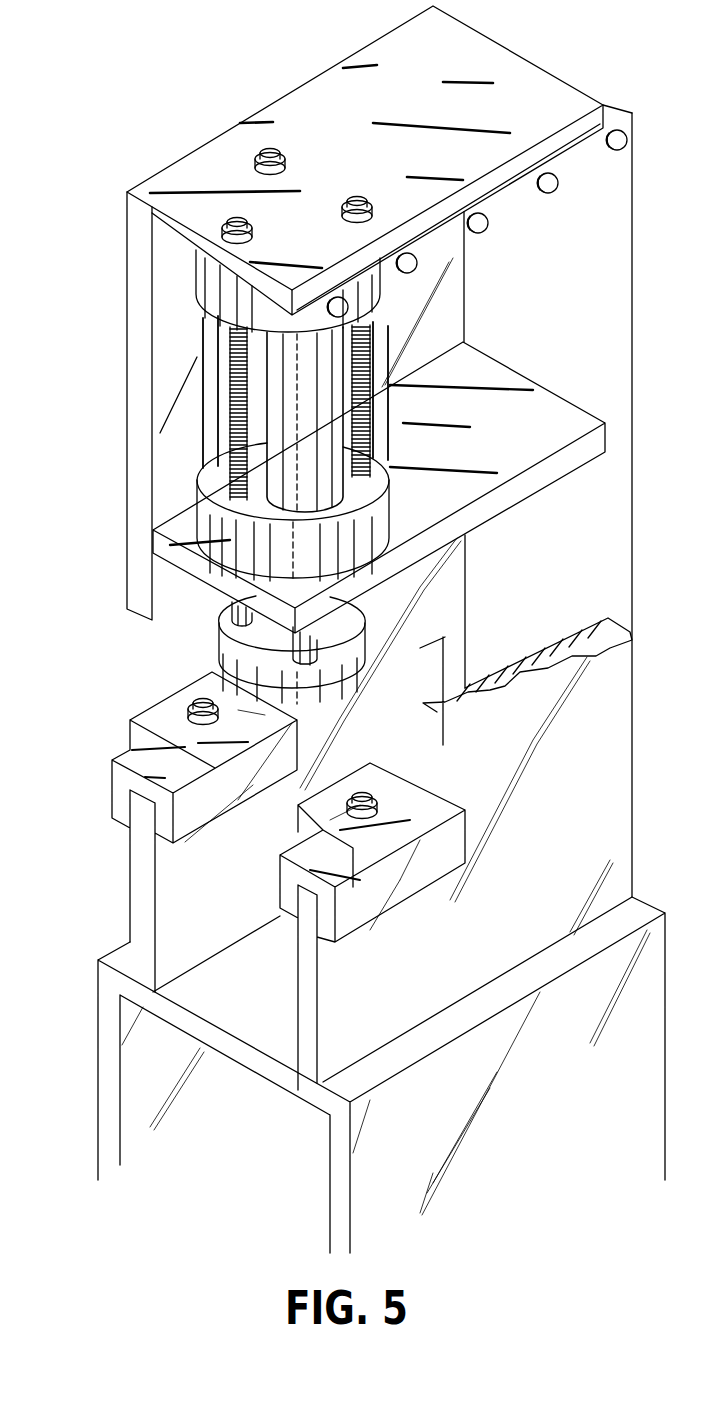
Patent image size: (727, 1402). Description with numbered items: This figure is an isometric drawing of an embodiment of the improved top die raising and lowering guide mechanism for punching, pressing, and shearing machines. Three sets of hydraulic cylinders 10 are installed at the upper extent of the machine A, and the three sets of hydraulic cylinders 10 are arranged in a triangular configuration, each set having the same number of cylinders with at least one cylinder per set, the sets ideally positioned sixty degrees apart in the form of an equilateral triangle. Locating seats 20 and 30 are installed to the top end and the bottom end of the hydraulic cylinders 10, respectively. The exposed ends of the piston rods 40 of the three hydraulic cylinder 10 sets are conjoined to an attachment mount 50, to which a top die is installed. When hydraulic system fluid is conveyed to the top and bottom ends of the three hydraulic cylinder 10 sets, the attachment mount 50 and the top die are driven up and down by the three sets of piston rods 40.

The machine A is at (128, 205).
The hydraulic cylinders 10 is at (307, 417).
The locating seat 20 is at (215, 288).
The locating seat 30 is at (235, 532).
The piston rods 40 is at (303, 642).
The attachment mount 50 is at (255, 655).